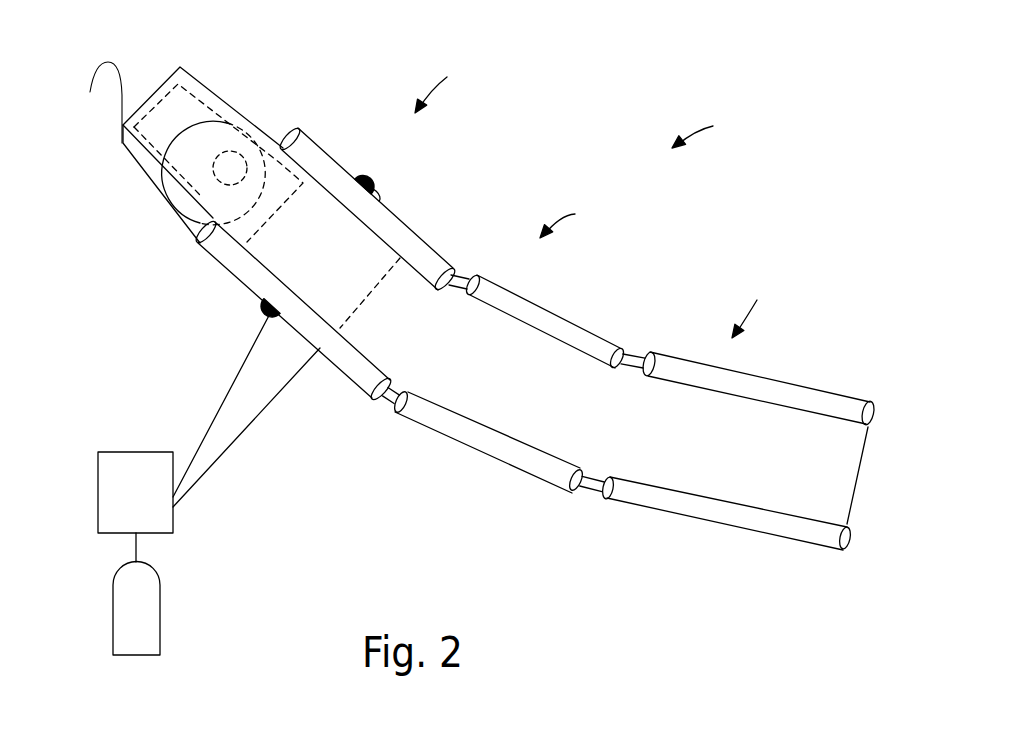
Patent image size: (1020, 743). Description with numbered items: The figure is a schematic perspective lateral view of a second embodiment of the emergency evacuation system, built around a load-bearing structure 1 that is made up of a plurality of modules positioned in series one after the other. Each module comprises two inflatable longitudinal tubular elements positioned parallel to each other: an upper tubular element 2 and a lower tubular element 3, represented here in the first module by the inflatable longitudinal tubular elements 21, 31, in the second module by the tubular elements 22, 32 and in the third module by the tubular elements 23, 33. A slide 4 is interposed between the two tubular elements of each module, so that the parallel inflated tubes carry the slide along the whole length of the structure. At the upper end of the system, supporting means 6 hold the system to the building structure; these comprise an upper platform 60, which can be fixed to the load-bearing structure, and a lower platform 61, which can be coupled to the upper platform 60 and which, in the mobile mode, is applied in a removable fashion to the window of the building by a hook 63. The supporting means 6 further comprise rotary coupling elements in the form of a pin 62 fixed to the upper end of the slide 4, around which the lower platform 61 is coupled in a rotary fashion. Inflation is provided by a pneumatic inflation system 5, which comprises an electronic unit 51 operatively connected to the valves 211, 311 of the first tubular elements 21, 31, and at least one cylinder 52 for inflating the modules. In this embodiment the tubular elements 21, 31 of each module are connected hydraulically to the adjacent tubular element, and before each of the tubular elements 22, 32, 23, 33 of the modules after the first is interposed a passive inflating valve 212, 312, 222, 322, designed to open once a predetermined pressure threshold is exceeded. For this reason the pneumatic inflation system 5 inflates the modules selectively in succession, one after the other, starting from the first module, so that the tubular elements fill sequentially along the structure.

The load-bearing structure 1 is at (509, 183).
The inflatable longitudinal tubular element 2 is at (314, 122).
The inflatable longitudinal tubular element 3 is at (212, 285).
The slide 4 is at (853, 474).
The pneumatic inflation system 5 is at (60, 497).
The supporting means 6 is at (140, 204).
The inflatable longitudinal tubular element 21 is at (324, 146).
The inflatable longitudinal tubular element 22 is at (534, 302).
The inflatable longitudinal tubular element 23 is at (768, 373).
The inflatable longitudinal tubular element 31 is at (343, 372).
The inflatable longitudinal tubular element 32 is at (488, 456).
The inflatable longitudinal tubular element 33 is at (750, 540).
The electronic unit 51 is at (120, 452).
The cylinder 52 is at (160, 613).
The upper platform 60 is at (268, 138).
The lower platform 61 is at (204, 82).
The pin 62 is at (200, 215).
The hook 63 is at (110, 62).
The valve 211 is at (356, 172).
The passive inflating valve 212 is at (468, 272).
The passive inflating valve 222 is at (632, 350).
The valve 311 is at (262, 302).
The passive inflating valve 312 is at (384, 405).
The passive inflating valve 322 is at (587, 493).